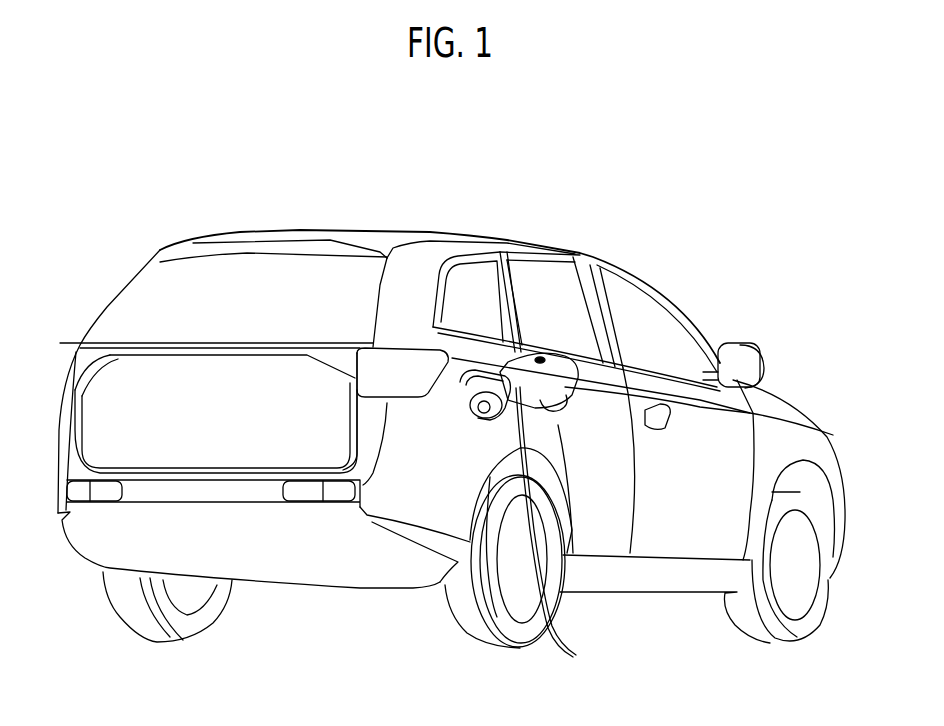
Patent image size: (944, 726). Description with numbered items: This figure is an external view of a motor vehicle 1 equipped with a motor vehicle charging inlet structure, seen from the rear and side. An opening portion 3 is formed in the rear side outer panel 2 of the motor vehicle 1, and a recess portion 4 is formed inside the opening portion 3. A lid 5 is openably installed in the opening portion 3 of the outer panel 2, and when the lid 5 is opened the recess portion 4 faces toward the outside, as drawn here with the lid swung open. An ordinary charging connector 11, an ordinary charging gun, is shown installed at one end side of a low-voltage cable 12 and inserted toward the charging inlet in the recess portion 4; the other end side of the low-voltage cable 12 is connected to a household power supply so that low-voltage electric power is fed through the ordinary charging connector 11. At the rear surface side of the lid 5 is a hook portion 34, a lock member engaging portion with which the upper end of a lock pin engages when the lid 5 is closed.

The motor vehicle 1 is at (482, 228).
The rear side outer panel 2 is at (455, 460).
The opening portion 3 is at (473, 427).
The recess portion 4 is at (492, 378).
The lid 5 is at (543, 407).
The ordinary charging connector 11 is at (463, 402).
The low-voltage cable 12 is at (553, 637).
The hook portion 34 is at (540, 362).